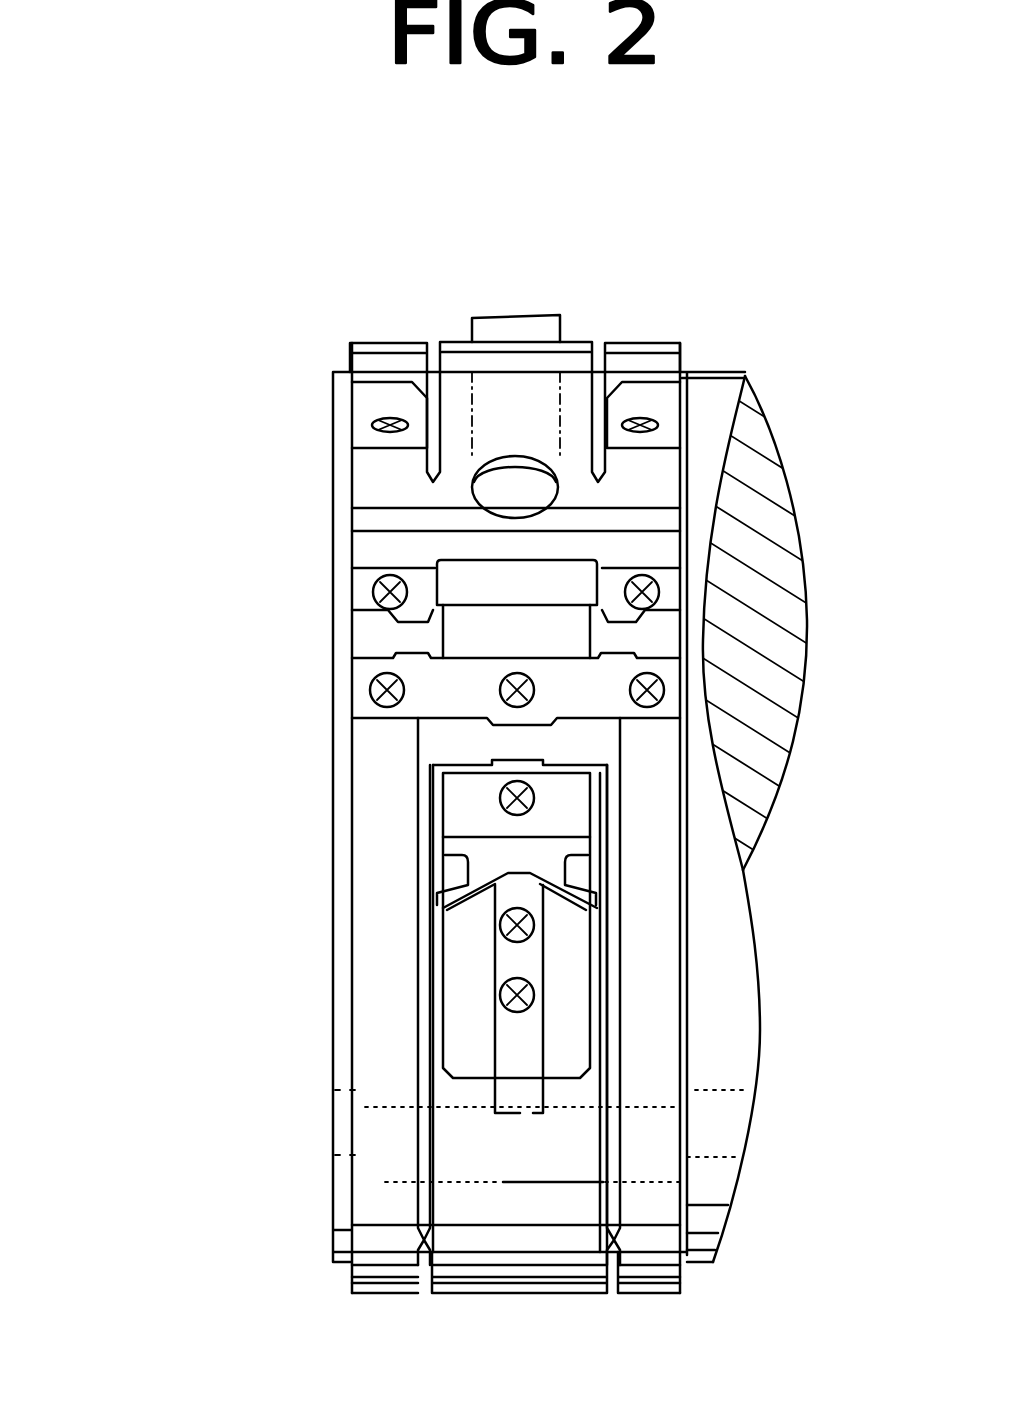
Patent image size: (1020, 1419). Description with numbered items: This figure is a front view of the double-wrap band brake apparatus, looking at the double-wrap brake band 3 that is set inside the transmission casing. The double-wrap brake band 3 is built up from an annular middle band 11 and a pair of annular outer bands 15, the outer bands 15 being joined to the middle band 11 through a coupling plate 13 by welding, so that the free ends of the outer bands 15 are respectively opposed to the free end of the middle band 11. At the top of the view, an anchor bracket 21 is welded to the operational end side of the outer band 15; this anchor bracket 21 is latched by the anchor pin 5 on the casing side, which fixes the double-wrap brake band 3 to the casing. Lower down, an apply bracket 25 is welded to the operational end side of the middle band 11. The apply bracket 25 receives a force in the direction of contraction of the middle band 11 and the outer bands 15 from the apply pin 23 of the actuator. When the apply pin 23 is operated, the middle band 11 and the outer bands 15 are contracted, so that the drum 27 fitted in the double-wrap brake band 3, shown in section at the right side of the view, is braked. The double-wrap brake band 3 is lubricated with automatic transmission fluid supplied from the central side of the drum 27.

The double-wrap brake band 3 is at (230, 397).
The anchor pin 5 is at (517, 333).
The middle band 11 is at (580, 343).
The coupling plate 13 is at (360, 692).
The outer bands 15 is at (402, 357).
The anchor bracket 21 is at (383, 483).
The apply pin 23 is at (523, 1095).
The apply bracket 25 is at (477, 848).
The drum 27 is at (720, 980).